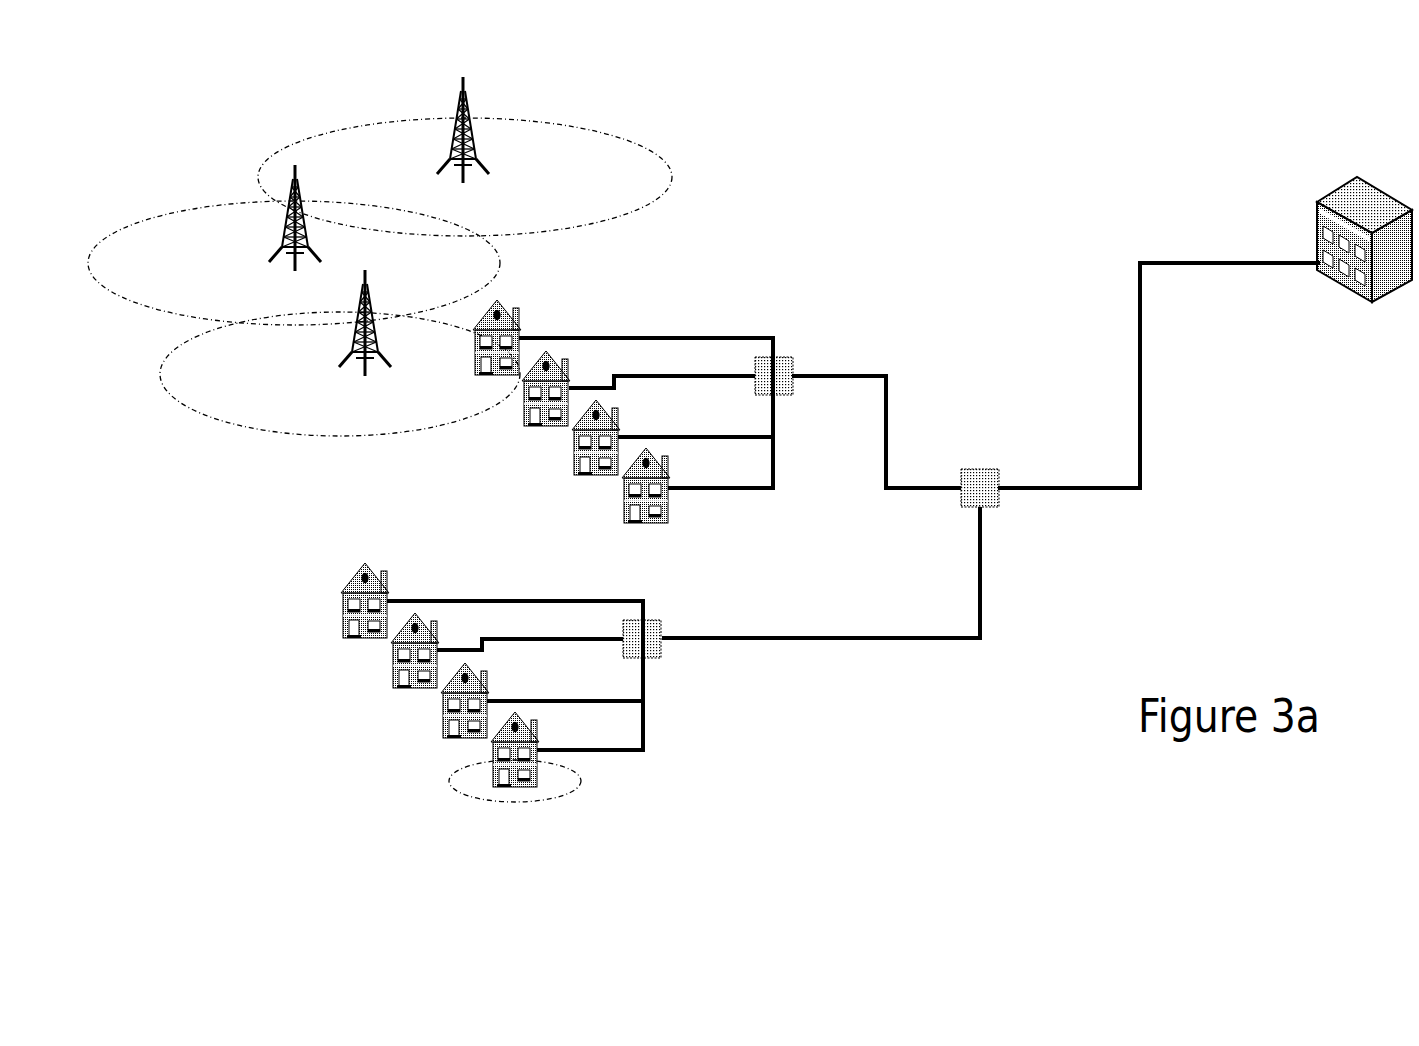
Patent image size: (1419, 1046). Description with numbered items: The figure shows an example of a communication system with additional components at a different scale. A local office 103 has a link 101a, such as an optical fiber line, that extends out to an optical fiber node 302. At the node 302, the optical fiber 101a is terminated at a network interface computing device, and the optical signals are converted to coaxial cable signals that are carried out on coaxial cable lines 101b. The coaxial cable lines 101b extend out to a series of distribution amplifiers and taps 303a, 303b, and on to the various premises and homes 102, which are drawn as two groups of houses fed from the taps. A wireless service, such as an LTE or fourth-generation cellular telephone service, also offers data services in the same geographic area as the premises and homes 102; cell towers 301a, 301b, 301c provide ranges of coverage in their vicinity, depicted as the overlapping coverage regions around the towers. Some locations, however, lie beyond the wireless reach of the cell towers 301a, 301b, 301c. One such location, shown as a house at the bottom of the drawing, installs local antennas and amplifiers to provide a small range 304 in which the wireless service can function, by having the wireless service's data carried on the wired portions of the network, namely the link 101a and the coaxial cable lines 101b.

The cell tower 301a is at (465, 156).
The cell tower 301b is at (294, 245).
The cell tower 301c is at (340, 353).
The link 101a is at (1157, 252).
The coaxial cable lines 101b is at (933, 637).
The premises and homes 102 is at (558, 479).
The local office 103 is at (1365, 177).
The optical fiber node 302 is at (988, 460).
The distribution amplifier and tap 303a is at (792, 357).
The distribution amplifier and tap 303b is at (662, 620).
The small range 304 is at (450, 800).